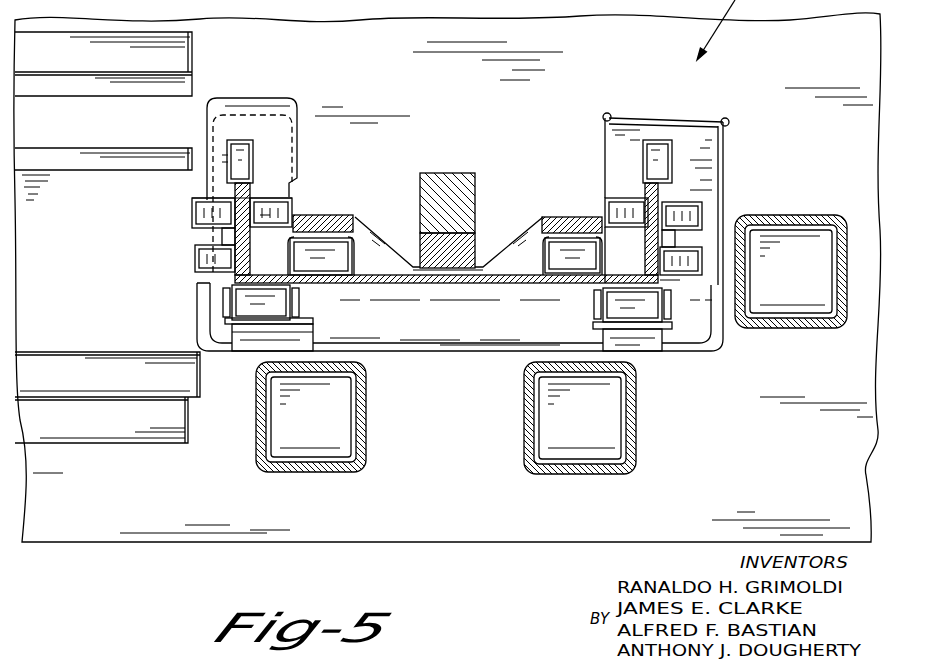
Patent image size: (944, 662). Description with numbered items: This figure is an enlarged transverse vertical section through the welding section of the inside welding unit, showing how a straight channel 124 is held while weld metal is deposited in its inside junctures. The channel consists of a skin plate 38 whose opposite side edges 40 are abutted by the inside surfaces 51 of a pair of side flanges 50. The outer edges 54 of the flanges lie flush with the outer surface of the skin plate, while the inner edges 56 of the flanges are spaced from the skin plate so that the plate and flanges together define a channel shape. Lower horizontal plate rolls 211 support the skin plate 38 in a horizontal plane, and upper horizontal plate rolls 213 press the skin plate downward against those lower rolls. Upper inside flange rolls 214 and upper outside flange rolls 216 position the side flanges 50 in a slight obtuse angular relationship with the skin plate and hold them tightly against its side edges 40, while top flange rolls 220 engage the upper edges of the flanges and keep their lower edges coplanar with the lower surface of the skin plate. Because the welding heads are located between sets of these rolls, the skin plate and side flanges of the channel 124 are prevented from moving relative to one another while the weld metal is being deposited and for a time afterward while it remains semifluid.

The skin plate 38 is at (497, 283).
The side edges 40 is at (243, 290).
The side flanges 50 is at (253, 190).
The inside surfaces 51 is at (598, 215).
The outer edges 54 is at (247, 290).
The inner edges 56 is at (666, 176).
The straight channel 124 is at (436, 283).
The lower horizontal plate rolls 211 is at (278, 292).
The upper horizontal plate rolls 213 is at (340, 262).
The upper inside flange rolls 214 is at (285, 216).
The upper outside flange rolls 216 is at (193, 263).
The top flange rolls 220 is at (240, 150).